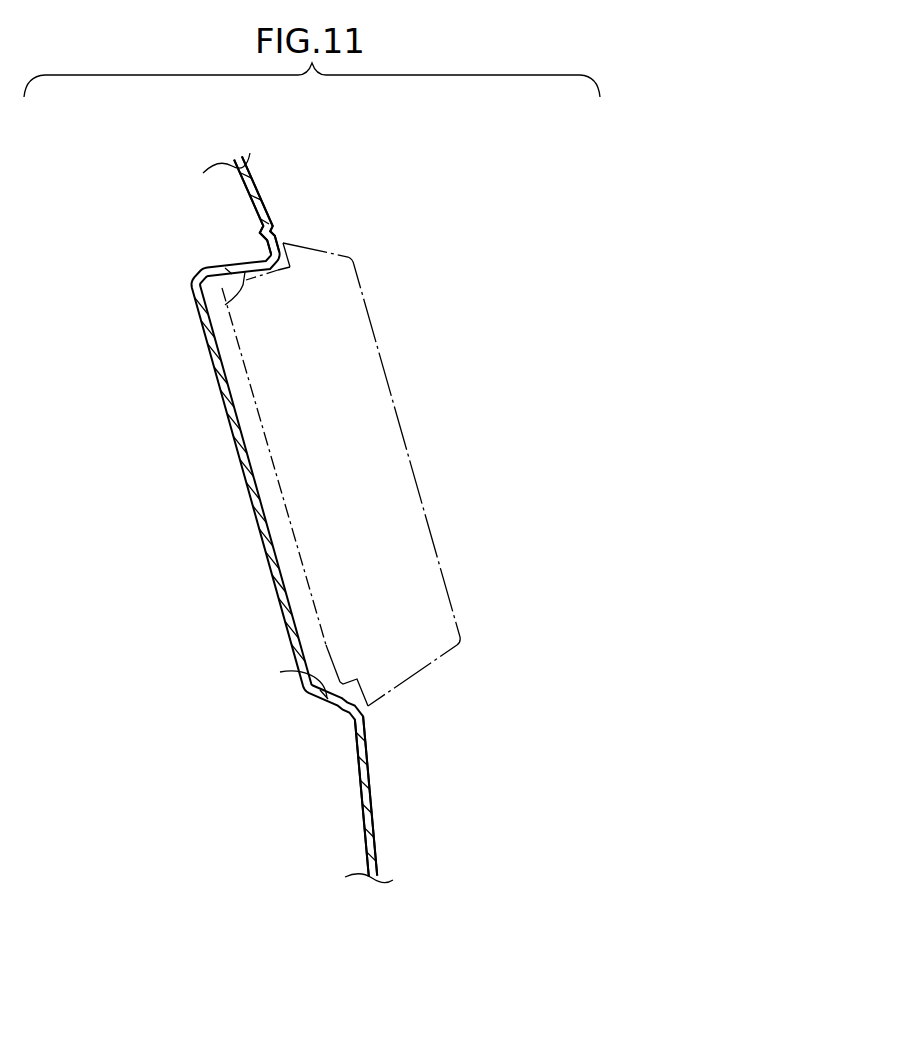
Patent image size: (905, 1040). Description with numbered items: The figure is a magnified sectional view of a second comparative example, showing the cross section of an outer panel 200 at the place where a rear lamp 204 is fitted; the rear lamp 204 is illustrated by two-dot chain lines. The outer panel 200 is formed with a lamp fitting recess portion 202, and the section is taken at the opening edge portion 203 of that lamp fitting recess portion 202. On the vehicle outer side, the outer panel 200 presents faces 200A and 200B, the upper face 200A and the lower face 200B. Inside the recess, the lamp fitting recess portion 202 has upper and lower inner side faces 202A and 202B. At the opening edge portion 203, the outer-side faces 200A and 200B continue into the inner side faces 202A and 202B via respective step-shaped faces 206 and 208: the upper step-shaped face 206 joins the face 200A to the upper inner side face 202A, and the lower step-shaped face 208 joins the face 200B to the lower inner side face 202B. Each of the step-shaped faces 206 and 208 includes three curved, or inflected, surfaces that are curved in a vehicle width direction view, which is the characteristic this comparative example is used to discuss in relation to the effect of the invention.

The outer panel 200 is at (387, 841).
The face at vehicle outer side of outer panel 200A is at (256, 193).
The face at vehicle outer side of outer panel 200B is at (372, 769).
The lamp fitting recess portion 202 is at (300, 480).
The upper inner side face of lamp fitting recess portion 202A is at (225, 305).
The lower inner side face of lamp fitting recess portion 202B is at (280, 672).
The opening edge portion 203 is at (420, 470).
The rear lamp 204 is at (422, 483).
The step-shaped face 206 is at (292, 237).
The step-shaped face 208 is at (376, 714).